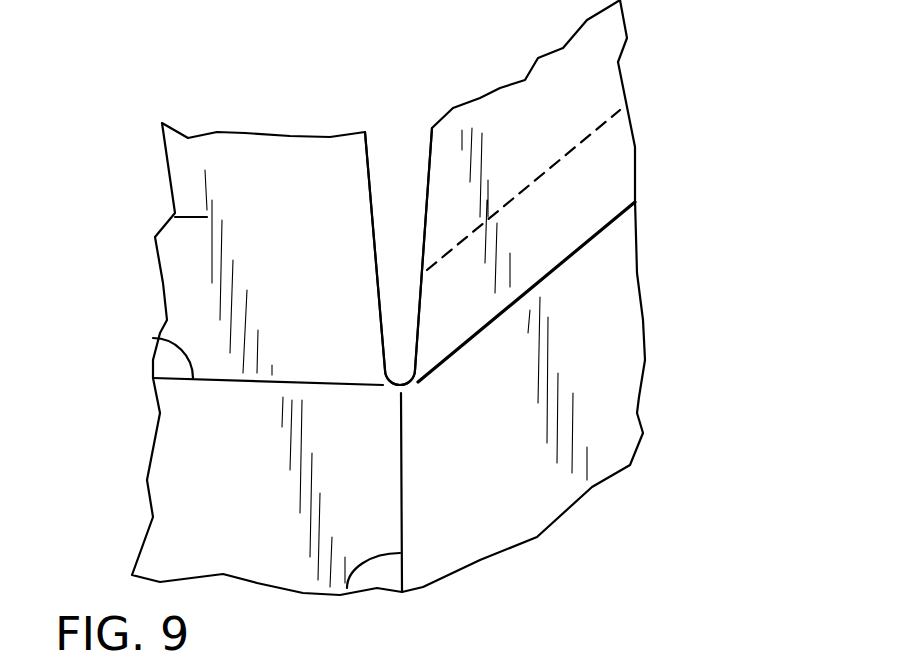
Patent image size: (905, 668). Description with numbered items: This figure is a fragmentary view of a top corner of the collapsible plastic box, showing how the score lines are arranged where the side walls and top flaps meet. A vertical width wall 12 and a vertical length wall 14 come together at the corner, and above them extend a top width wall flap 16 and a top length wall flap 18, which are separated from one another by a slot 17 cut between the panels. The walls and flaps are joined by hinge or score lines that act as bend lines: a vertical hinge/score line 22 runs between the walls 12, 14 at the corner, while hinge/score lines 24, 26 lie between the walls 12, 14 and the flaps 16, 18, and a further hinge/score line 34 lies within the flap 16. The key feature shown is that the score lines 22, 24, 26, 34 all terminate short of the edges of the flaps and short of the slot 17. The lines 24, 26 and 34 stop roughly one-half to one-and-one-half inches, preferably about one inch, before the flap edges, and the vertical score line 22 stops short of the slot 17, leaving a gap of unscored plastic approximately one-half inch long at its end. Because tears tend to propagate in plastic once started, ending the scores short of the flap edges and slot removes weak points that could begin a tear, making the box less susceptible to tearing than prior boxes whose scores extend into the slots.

The vertical width wall 12 is at (625, 397).
The vertical length wall 14 is at (183, 477).
The top width wall flap 16 is at (517, 122).
The slot 17 is at (397, 206).
The top length wall flap 18 is at (175, 212).
The vertical hinge/score line 22 is at (358, 570).
The hinge/score line 24 is at (582, 248).
The hinge/score line 26 is at (170, 333).
The hinge/score line 34 is at (593, 140).